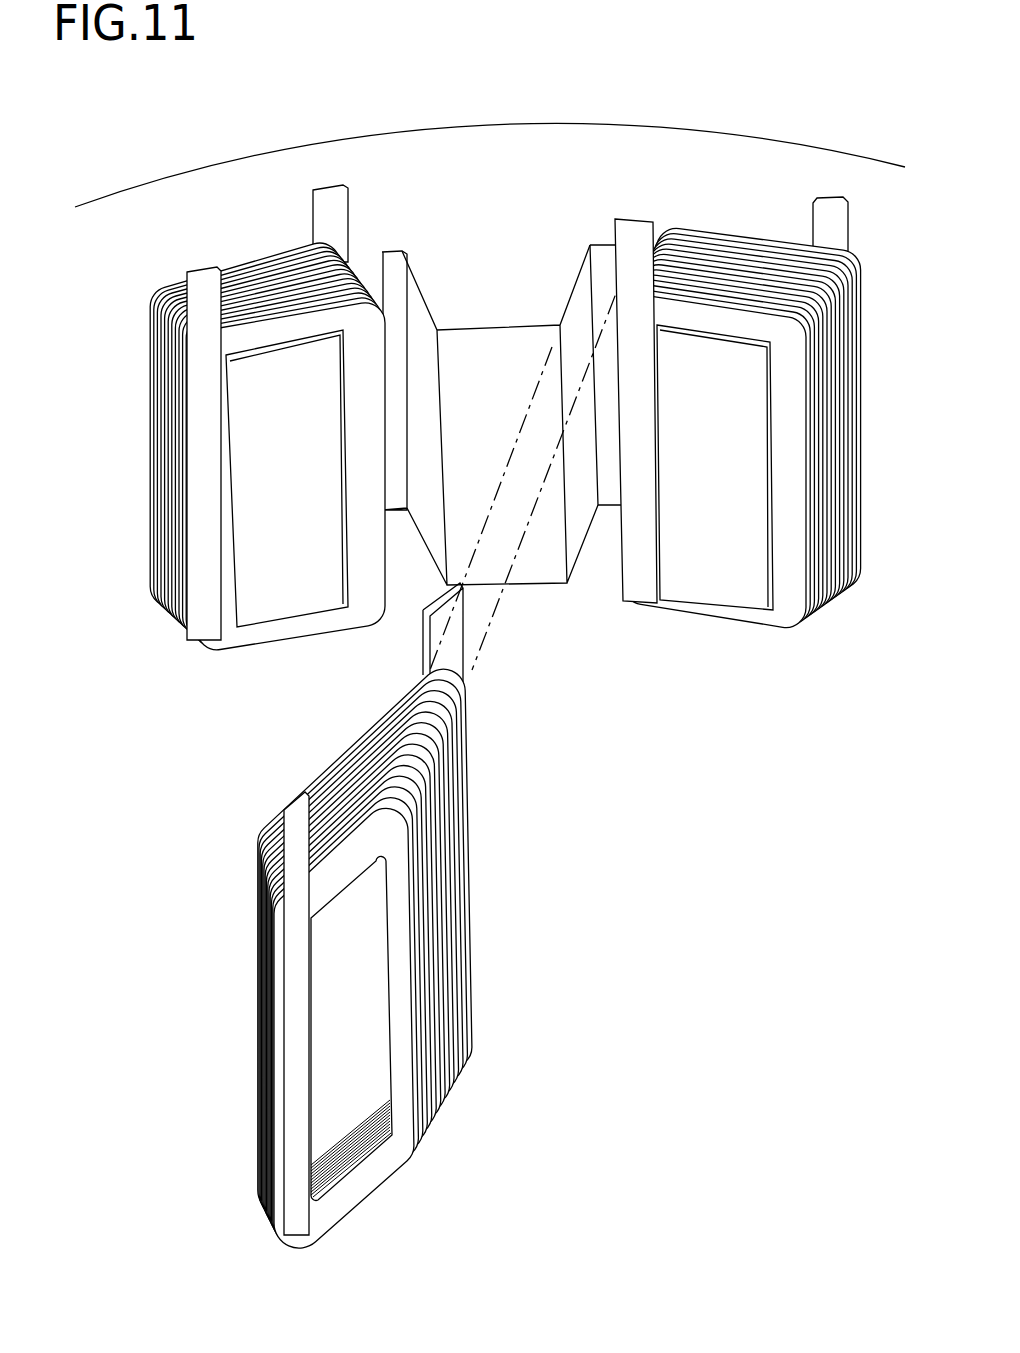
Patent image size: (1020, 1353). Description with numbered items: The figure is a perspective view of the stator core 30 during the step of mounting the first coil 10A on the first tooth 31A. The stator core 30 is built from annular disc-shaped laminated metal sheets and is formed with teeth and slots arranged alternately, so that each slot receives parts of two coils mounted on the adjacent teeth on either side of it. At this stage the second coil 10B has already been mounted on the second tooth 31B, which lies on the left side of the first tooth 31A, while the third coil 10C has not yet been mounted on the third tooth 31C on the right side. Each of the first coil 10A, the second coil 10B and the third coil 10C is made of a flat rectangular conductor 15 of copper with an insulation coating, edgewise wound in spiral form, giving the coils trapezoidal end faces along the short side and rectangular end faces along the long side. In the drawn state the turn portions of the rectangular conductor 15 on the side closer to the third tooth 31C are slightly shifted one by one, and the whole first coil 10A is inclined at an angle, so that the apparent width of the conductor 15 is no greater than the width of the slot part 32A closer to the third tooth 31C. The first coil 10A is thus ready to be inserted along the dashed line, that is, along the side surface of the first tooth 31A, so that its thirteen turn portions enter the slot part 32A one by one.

The stator core 30 is at (502, 143).
The slot part 32A is at (378, 272).
The first tooth 31A is at (527, 311).
The second tooth 31B is at (330, 481).
The third tooth 31C is at (735, 481).
The first coil 10A is at (428, 915).
The second coil 10B is at (172, 663).
The third coil 10C is at (708, 645).
The rectangular conductor 15 is at (403, 1018).